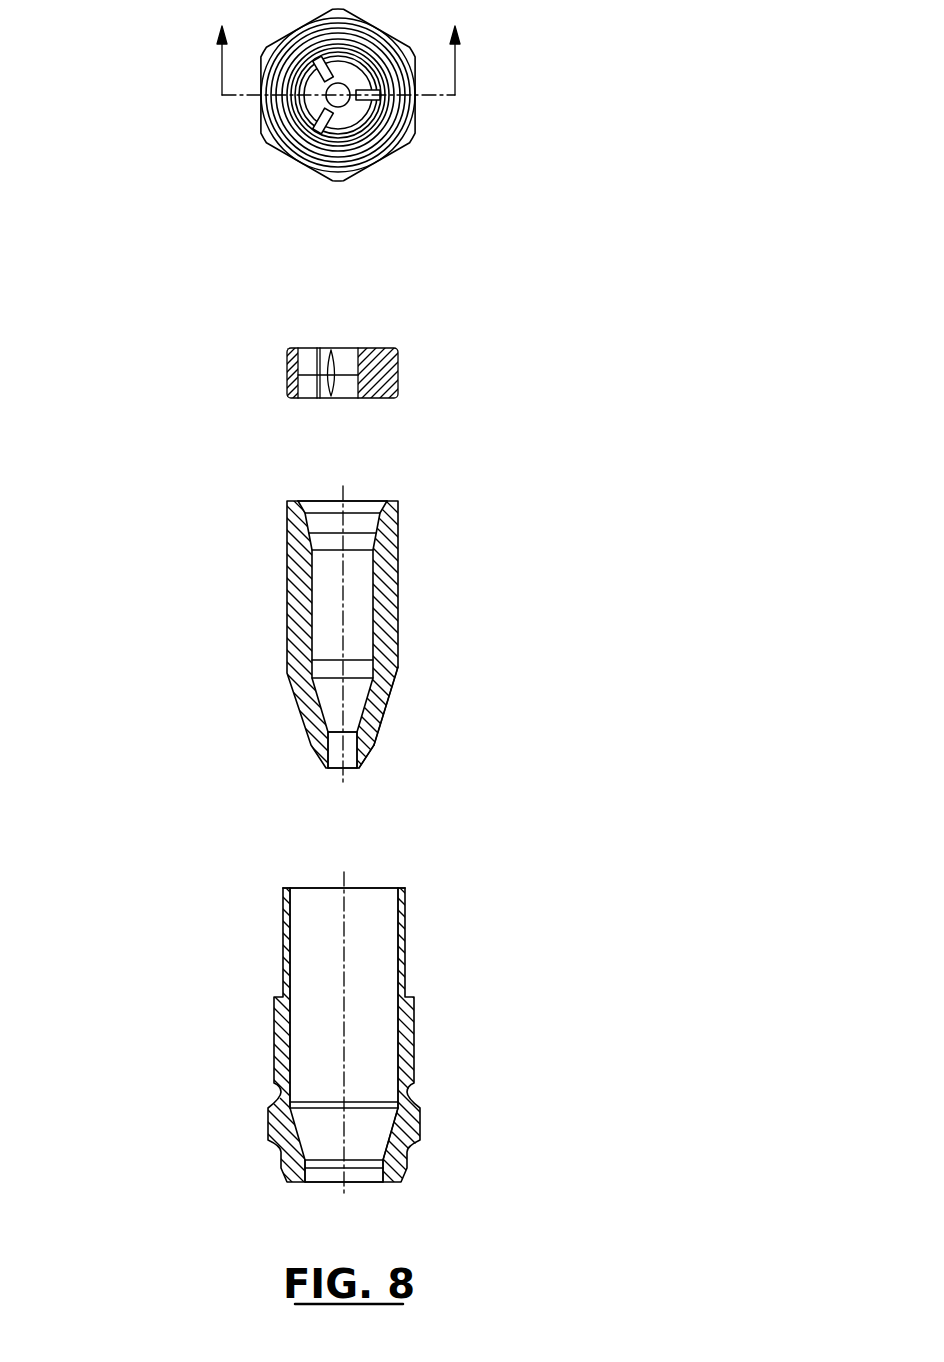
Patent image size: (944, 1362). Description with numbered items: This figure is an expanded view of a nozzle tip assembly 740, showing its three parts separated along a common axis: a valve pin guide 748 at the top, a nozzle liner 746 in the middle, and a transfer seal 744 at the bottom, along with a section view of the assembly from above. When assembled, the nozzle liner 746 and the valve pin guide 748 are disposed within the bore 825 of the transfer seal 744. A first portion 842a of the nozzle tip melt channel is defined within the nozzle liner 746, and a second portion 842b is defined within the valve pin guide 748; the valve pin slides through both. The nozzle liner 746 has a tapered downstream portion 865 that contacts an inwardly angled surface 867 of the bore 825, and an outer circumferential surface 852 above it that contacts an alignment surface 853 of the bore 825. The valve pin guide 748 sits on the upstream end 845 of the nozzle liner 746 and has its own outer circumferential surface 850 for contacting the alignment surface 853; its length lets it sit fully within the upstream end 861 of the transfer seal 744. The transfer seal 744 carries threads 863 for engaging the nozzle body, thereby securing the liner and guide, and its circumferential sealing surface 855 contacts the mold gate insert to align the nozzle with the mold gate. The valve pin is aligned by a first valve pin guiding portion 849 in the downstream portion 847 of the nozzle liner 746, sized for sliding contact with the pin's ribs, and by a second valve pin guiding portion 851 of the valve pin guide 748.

The nozzle tip assembly 740 is at (130, 537).
The valve pin guide 748 is at (432, 373).
The outer circumferential surface 850 is at (286, 375).
The second portion of nozzle tip melt channel 842b is at (348, 360).
The second valve pin guiding portion 851 is at (348, 385).
The nozzle liner 746 is at (478, 620).
The upstream end 845 is at (395, 518).
The outer circumferential surface 852 is at (390, 590).
The first portion of nozzle tip melt channel 842a is at (323, 618).
The tapered downstream portion 865 is at (388, 723).
The downstream portion 847 is at (382, 756).
The first valve pin guiding portion 849 is at (329, 760).
The transfer seal 744 is at (470, 1032).
The upstream end 861 is at (283, 889).
The bore 825 is at (318, 960).
The alignment surface 853 is at (392, 990).
The threads 863 is at (275, 1030).
The circumferential sealing surface 855 is at (385, 1152).
The inwardly angled surface 867 is at (395, 1156).